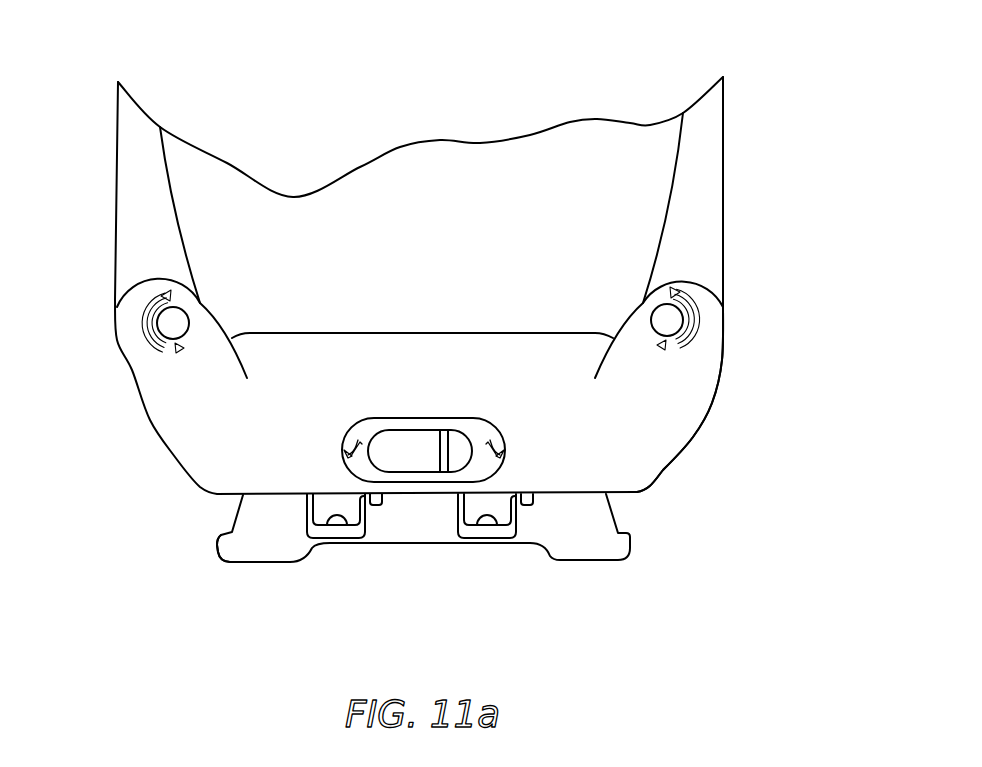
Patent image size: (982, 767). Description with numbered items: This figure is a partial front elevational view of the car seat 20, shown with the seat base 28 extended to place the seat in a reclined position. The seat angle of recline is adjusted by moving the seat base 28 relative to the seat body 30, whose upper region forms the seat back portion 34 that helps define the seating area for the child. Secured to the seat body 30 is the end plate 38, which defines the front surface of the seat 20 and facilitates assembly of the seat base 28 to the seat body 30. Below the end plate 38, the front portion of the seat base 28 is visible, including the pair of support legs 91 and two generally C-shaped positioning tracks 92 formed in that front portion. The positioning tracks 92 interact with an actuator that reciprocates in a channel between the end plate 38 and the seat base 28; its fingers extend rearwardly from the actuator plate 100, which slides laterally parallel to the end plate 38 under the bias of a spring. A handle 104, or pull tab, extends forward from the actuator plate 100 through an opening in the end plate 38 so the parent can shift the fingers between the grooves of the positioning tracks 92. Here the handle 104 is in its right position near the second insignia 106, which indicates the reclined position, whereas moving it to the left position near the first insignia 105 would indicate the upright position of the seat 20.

The car seat 20 is at (486, 250).
The seat base 28 is at (242, 563).
The seat body 30 is at (720, 427).
The seat back portion 34 is at (608, 209).
The end plate 38 is at (611, 432).
The support legs 91 is at (224, 546).
The positioning tracks 92 is at (337, 519).
The actuator plate 100 is at (397, 440).
The handle 104 is at (440, 440).
The first insignia 105 is at (350, 453).
The second insignia 106 is at (505, 449).